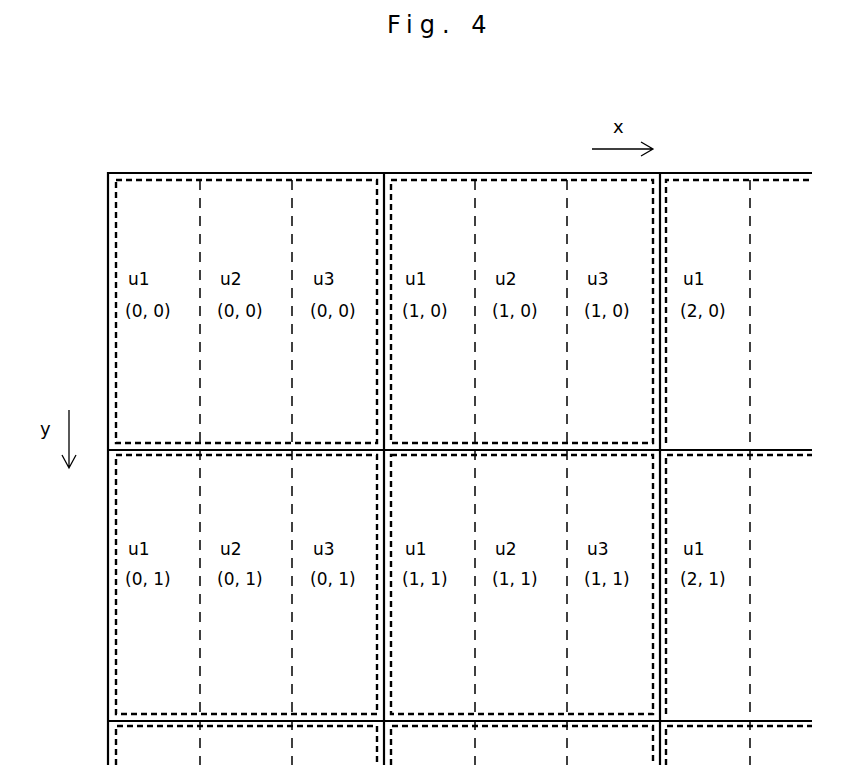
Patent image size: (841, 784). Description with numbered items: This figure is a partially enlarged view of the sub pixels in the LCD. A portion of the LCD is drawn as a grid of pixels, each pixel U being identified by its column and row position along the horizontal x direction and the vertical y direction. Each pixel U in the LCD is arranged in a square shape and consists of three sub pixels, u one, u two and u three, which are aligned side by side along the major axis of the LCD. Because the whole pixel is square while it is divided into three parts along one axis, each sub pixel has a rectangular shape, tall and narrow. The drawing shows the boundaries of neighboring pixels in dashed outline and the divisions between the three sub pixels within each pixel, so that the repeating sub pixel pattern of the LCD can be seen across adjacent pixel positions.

The element LCD is at (417, 438).